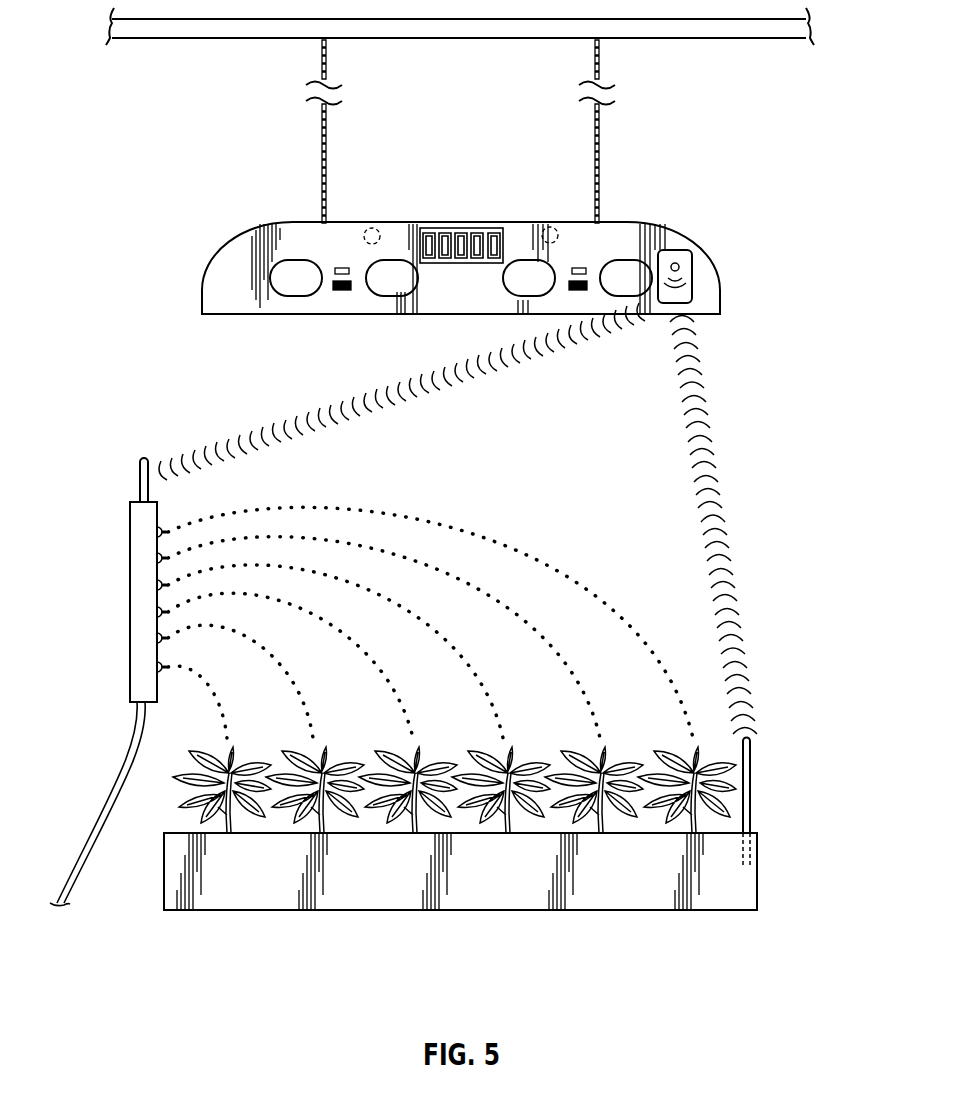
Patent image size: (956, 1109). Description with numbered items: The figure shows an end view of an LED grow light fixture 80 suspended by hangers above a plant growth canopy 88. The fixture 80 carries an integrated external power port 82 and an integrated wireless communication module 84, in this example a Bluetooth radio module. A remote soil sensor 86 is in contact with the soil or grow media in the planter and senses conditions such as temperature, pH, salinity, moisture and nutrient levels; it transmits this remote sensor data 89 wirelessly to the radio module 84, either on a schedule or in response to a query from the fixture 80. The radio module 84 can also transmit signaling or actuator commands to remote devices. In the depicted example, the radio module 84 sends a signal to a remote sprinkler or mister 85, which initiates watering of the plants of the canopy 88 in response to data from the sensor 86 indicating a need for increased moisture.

The LED grow light fixture 80 is at (232, 246).
The integrated external power port 82 is at (463, 226).
The integrated wireless communication module 84 is at (693, 277).
The remote sprinkler or mister 85 is at (130, 532).
The remote soil sensor 86 is at (753, 760).
The plant growth canopy 88 is at (345, 749).
The remote sensor data 89 is at (720, 497).